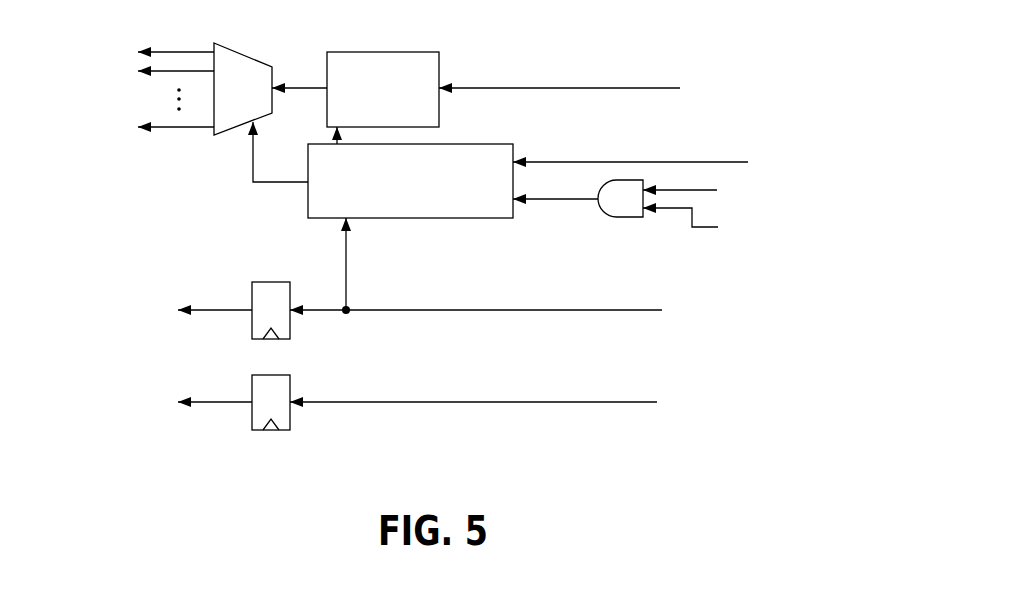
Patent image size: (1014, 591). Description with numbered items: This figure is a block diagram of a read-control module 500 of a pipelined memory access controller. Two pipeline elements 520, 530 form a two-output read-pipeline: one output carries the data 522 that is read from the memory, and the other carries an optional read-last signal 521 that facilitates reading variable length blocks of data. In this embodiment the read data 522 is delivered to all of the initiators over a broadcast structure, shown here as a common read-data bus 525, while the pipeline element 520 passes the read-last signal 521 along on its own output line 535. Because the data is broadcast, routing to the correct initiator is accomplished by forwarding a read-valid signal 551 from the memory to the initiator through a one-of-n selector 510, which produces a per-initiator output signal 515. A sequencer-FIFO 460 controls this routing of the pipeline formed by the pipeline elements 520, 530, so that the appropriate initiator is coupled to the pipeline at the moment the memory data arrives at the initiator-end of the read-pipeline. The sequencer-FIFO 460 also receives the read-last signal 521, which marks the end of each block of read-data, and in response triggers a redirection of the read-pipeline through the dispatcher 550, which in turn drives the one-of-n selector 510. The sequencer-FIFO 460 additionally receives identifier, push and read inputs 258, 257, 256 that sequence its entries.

The read-control module 500 is at (498, 359).
The 1-of-n selector 510 is at (243, 56).
The output signal of the 1-of-n selector 515 is at (140, 70).
The dispatcher 550 is at (387, 50).
The read-valid signal 551 is at (747, 63).
The sequencer-FIFO 460 is at (413, 218).
The id signal 258 is at (783, 148).
The push signal 257 is at (785, 188).
The read signal 256 is at (785, 227).
The read-last signal 521 is at (700, 292).
The pipeline element 520 is at (268, 282).
The common read-data bus 525 is at (176, 310).
The read data 522 is at (700, 382).
The pipeline element 530 is at (268, 375).
The Rd Data output 535 is at (176, 402).